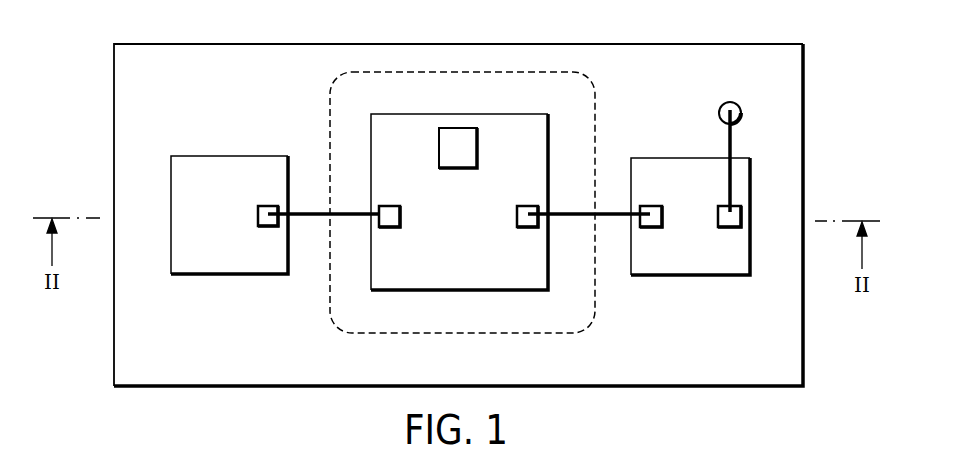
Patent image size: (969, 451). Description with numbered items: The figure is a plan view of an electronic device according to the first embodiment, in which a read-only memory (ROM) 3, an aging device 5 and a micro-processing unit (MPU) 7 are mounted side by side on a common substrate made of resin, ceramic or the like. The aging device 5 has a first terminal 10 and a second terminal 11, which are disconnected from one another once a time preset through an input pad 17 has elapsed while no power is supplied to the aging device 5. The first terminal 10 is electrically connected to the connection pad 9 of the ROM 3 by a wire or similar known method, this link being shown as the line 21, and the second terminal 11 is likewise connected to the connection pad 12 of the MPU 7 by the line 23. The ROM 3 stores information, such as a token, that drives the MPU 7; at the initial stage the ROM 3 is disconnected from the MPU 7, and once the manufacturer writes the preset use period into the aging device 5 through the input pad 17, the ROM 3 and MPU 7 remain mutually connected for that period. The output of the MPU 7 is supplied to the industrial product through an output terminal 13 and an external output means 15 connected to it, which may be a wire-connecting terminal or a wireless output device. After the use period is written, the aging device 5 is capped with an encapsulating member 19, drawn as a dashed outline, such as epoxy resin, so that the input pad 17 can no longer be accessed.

The read-only memory (ROM) 3 is at (196, 262).
The aging device 5 is at (452, 270).
The micro-processing unit (MPU) 7 is at (680, 262).
The connection pad 9 is at (263, 205).
The first terminal 10 is at (387, 206).
The second terminal 11 is at (517, 215).
The connection pad 12 is at (651, 205).
The output terminal 13 is at (745, 218).
The external output means 15 is at (728, 102).
The input pad 17 is at (456, 148).
The encapsulating member 19 is at (554, 71).
The wiring 21 is at (313, 222).
The wiring 23 is at (614, 221).